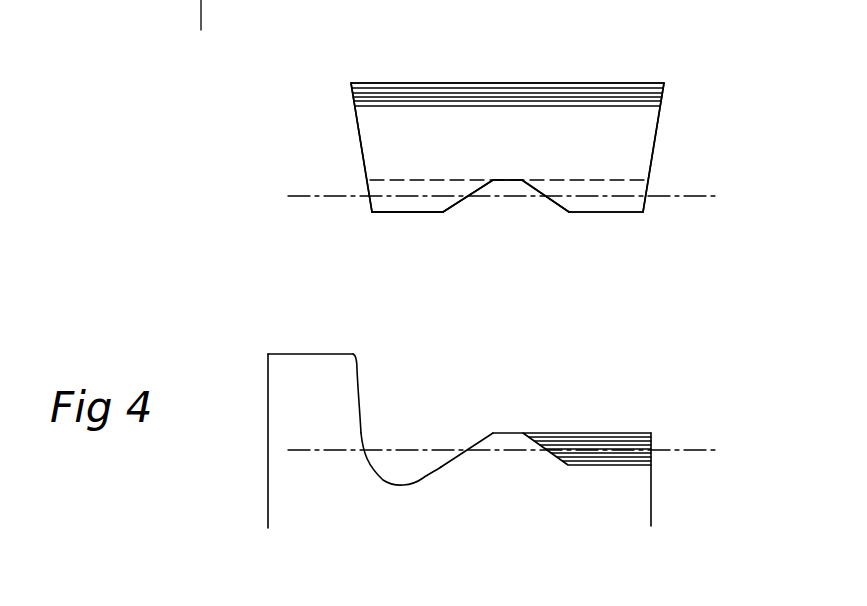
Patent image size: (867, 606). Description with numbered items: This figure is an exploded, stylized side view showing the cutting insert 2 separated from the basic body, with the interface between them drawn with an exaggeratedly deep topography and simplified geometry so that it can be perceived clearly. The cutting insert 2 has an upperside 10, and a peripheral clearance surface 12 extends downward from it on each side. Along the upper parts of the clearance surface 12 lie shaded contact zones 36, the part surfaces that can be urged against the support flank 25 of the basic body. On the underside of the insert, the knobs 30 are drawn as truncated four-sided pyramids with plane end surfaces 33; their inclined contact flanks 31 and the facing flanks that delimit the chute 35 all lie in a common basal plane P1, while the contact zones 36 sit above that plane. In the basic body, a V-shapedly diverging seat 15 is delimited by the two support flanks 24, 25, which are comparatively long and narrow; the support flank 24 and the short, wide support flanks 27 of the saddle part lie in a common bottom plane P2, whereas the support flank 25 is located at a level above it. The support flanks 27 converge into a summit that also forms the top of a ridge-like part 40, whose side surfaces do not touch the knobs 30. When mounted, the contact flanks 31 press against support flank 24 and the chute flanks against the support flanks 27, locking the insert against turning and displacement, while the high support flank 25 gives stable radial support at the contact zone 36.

The cutting insert 2 is at (327, 93).
The upperside 10 is at (507, 82).
The contact zone 36 is at (614, 95).
The clearance surface 12 is at (361, 145).
The knob 30 is at (371, 213).
The end surface 33 is at (425, 213).
The contact flank 31 is at (462, 202).
The chute 35 is at (503, 208).
The basal plane P1 is at (707, 199).
The support flank 25 is at (358, 369).
The seat 15 is at (417, 438).
The support flank 24 is at (474, 441).
The ridge-like part 40 is at (507, 442).
The support flank 27 is at (603, 458).
The bottom plane P2 is at (712, 450).